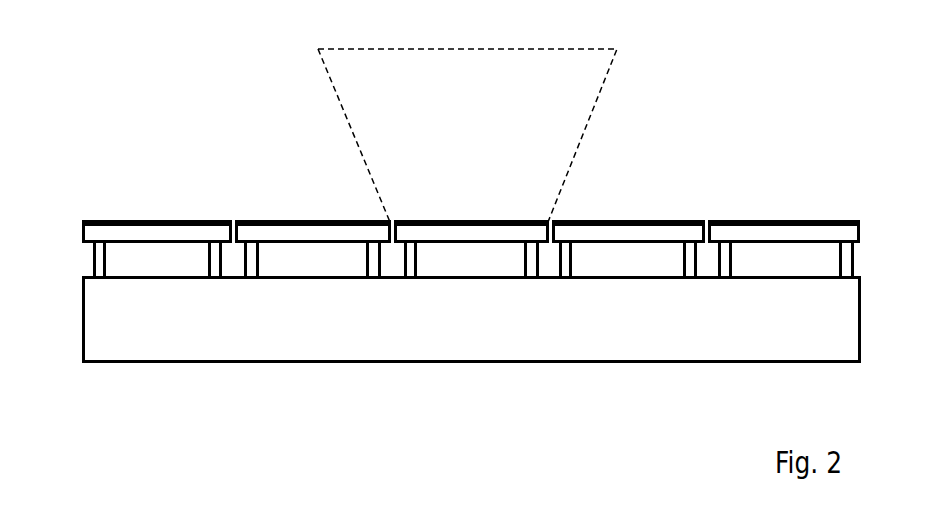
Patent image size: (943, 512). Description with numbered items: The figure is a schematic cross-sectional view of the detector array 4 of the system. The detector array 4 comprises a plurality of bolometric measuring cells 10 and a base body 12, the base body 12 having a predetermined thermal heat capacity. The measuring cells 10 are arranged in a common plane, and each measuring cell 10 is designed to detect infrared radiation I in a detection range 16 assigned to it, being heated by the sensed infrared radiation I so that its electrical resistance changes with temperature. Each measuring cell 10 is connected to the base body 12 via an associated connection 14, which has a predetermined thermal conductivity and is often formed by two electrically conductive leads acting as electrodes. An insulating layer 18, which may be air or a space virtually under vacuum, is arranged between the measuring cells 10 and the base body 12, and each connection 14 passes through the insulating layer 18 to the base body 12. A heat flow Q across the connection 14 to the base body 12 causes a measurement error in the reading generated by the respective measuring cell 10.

The detector array 4 is at (710, 143).
The bolometric measuring cell 10 is at (205, 230).
The base body 12 is at (315, 348).
The connection 14 is at (197, 260).
The detection range 16 is at (570, 90).
The insulating layer 18 is at (866, 257).
The infrared radiation I is at (456, 205).
The heat flow Q is at (63, 240).